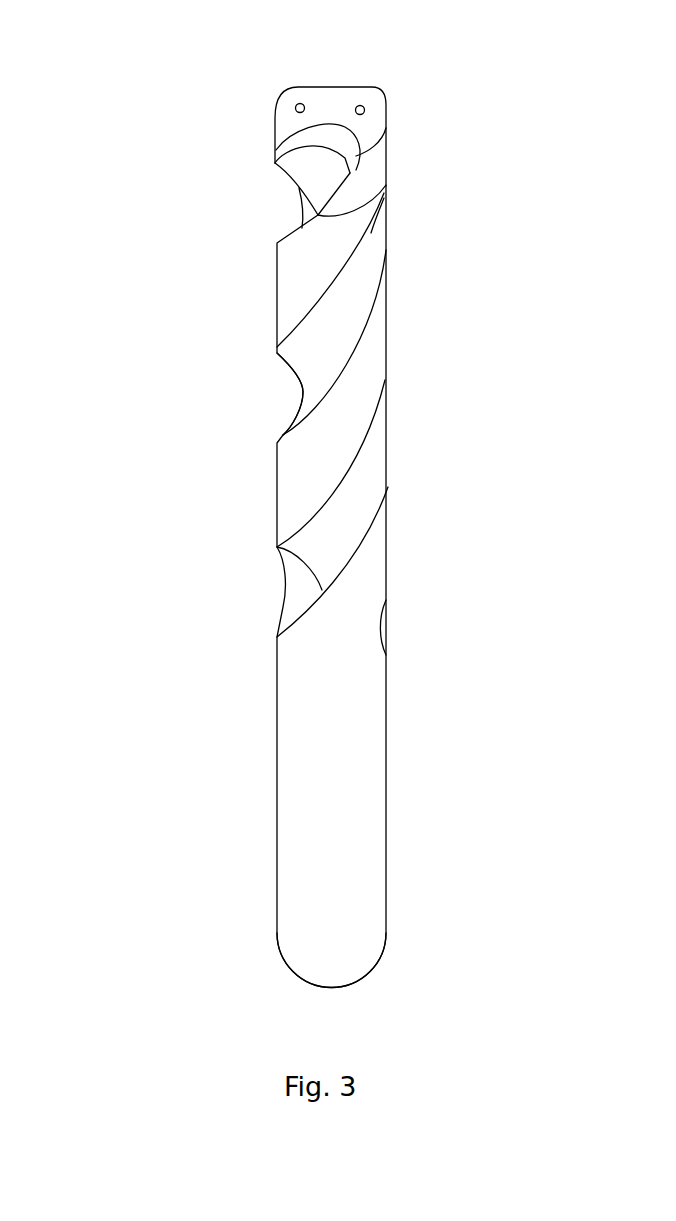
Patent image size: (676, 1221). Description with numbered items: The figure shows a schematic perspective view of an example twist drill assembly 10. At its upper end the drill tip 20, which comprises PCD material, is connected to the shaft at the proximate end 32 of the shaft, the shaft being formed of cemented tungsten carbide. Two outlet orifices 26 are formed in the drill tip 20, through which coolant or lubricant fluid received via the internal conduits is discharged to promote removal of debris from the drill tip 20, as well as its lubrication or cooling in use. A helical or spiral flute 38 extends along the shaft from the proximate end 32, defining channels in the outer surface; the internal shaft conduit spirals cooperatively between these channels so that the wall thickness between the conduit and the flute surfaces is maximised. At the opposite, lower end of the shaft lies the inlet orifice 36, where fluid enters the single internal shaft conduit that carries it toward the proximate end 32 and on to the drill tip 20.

The twist drill assembly 10 is at (186, 116).
The drill tip 20 is at (386, 134).
The outlet orifices 26 is at (298, 104).
The proximate end 32 is at (386, 191).
The inlet orifice 36 is at (331, 973).
The helical flute 38 is at (302, 386).